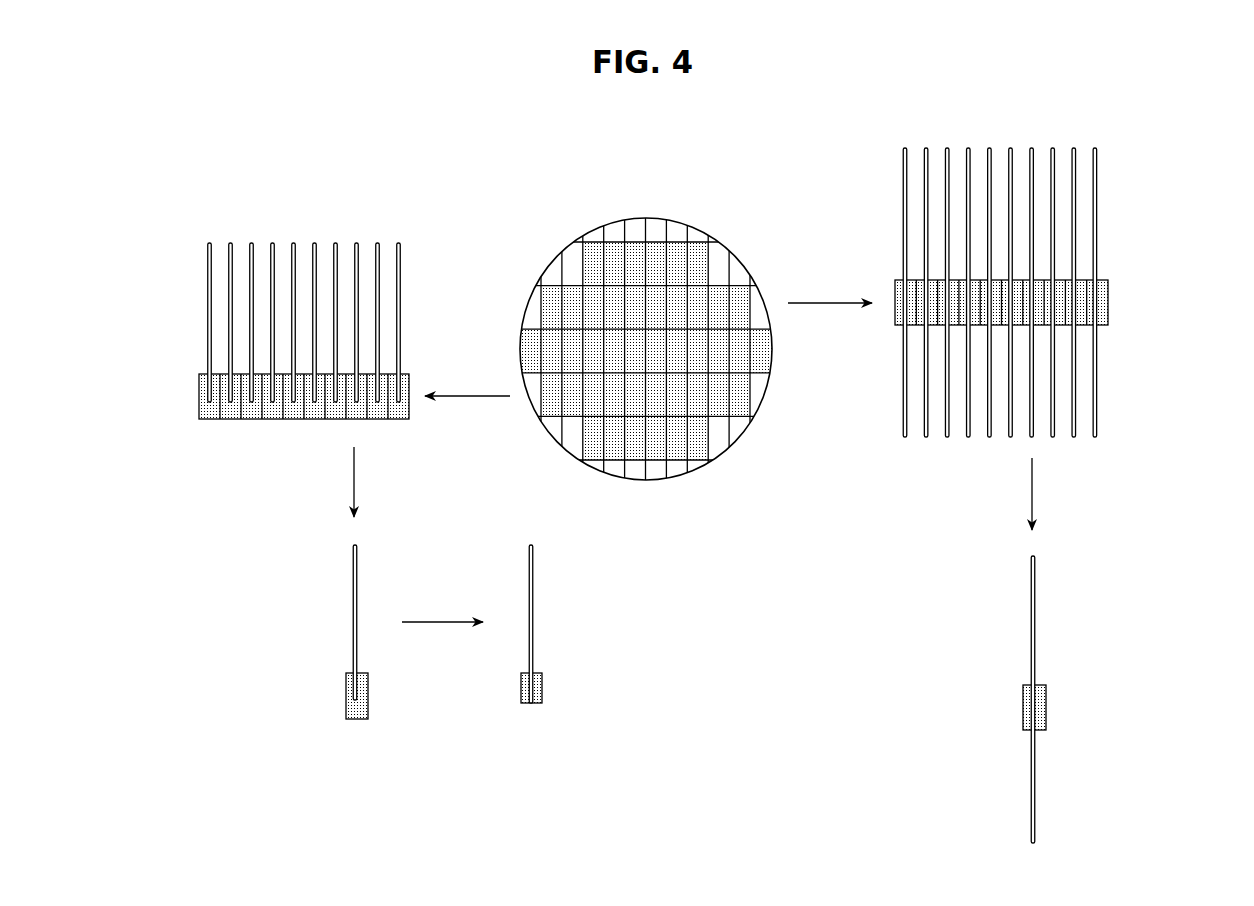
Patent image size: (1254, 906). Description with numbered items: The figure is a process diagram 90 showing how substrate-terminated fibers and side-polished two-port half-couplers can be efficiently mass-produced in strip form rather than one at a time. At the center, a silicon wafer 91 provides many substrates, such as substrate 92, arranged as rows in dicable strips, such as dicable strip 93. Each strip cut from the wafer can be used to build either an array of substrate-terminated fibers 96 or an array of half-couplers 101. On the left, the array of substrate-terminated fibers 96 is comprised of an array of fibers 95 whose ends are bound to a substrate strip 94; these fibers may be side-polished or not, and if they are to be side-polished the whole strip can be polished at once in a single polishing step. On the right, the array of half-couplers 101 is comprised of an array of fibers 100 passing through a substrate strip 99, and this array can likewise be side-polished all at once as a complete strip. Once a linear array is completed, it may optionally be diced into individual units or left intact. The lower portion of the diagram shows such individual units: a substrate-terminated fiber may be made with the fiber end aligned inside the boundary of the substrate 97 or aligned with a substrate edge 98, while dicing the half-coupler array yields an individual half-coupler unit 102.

The process diagram 90 is at (542, 102).
The silicon wafer 91 is at (622, 307).
The substrate 92 is at (700, 255).
The dicable strip 93 is at (543, 260).
The substrate strip 94 is at (178, 397).
The array of fibers 95 is at (180, 303).
The array of substrate-terminated fibers 96 is at (270, 272).
The individual unit with fiber end inside substrate boundary 97 is at (280, 620).
The individual unit with fiber end aligned with substrate edge 98 is at (577, 615).
The substrate strip 99 is at (1133, 298).
The array of fibers 100 is at (1132, 217).
The array of half-couplers 101 is at (1031, 227).
The individual half-coupler unit 102 is at (947, 652).